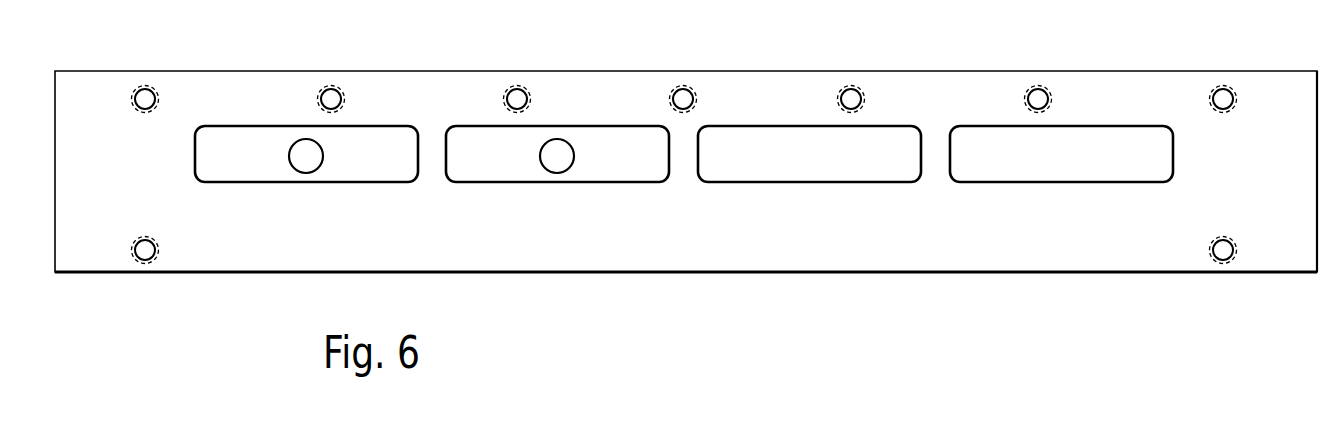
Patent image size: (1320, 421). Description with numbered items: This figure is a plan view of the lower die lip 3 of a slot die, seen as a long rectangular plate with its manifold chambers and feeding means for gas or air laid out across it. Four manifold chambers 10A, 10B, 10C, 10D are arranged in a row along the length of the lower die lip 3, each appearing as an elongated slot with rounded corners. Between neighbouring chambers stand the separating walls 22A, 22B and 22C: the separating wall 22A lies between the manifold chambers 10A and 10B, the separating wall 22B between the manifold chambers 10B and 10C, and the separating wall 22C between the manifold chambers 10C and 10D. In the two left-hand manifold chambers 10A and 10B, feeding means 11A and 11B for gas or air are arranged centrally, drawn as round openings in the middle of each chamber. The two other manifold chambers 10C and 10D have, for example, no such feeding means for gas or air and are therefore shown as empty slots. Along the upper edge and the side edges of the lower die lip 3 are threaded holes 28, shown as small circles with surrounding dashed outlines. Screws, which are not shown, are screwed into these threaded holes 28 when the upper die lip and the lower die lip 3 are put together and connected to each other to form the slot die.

The lower die lip 3 is at (715, 248).
The threaded holes 28 is at (327, 96).
The manifold chamber 10A is at (295, 183).
The manifold chamber 10B is at (557, 183).
The manifold chamber 10C is at (823, 158).
The manifold chamber 10D is at (1073, 162).
The feeding means for gas or air 11A is at (297, 158).
The feeding means for gas or air 11B is at (545, 158).
The separating wall 22A is at (433, 155).
The separating wall 22B is at (683, 155).
The separating wall 22C is at (937, 150).